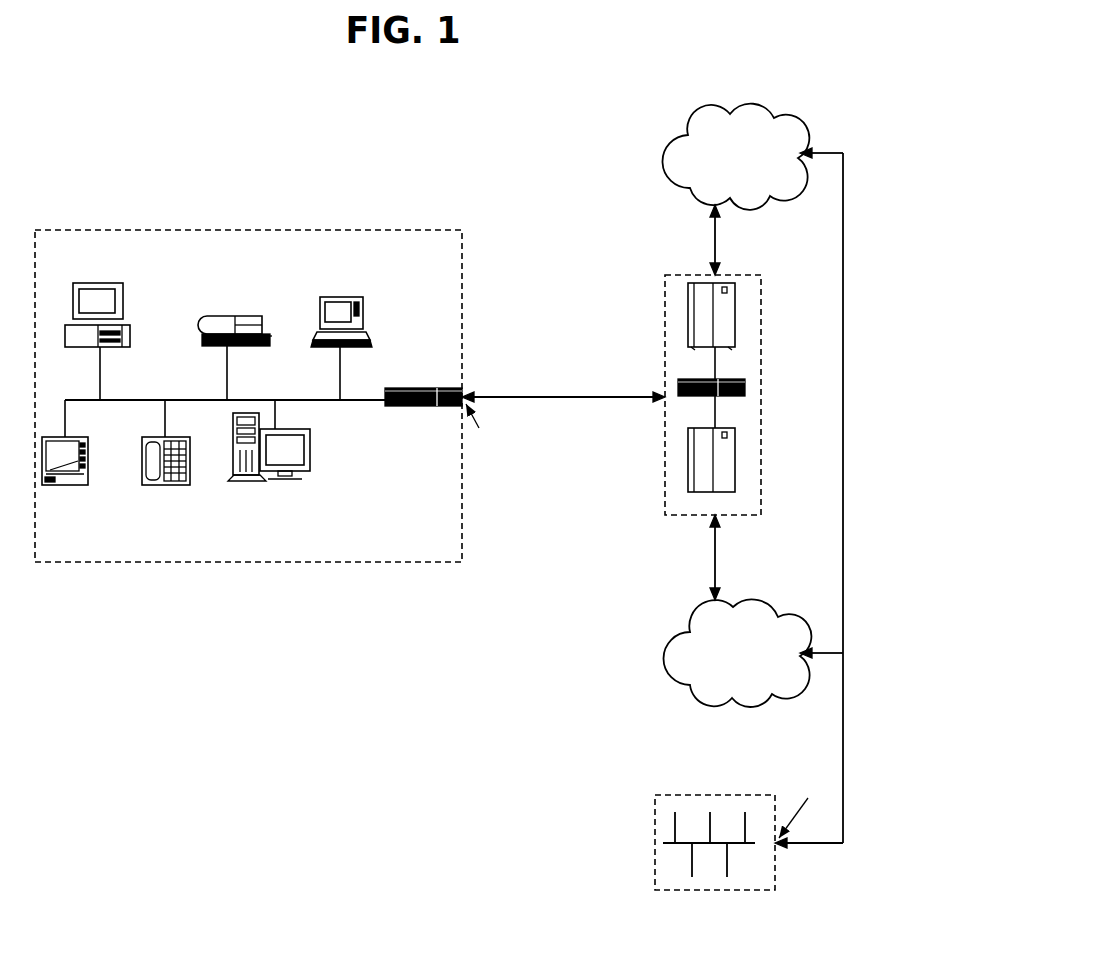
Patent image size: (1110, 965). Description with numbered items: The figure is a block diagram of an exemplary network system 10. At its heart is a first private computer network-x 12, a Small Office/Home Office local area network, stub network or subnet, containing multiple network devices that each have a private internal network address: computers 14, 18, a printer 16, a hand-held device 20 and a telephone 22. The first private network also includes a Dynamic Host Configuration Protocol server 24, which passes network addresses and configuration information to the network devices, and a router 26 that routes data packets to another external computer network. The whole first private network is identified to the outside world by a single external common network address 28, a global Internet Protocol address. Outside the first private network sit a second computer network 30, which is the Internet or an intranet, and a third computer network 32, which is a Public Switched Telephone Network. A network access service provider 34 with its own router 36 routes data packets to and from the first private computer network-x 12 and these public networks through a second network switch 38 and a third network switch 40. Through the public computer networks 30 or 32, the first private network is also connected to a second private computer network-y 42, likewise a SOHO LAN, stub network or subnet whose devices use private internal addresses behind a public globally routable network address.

The network system 10 is at (722, 71).
The first private computer network-x 12 is at (408, 553).
The computer 14 is at (130, 330).
The printer 16 is at (268, 331).
The computer 18 is at (365, 323).
The hand-held device 20 is at (88, 460).
The telephone 22 is at (190, 460).
The Dynamic Host Configuration Protocol server 24 is at (310, 442).
The router 26 is at (440, 388).
The external common network address 28 is at (515, 458).
The second computer network 30 is at (670, 655).
The third computer network 32 is at (670, 160).
The network access service provider 34 is at (762, 276).
The router 36 is at (745, 396).
The second network switch 38 is at (736, 460).
The third network switch 40 is at (688, 318).
The second private computer network-y 42 is at (660, 842).